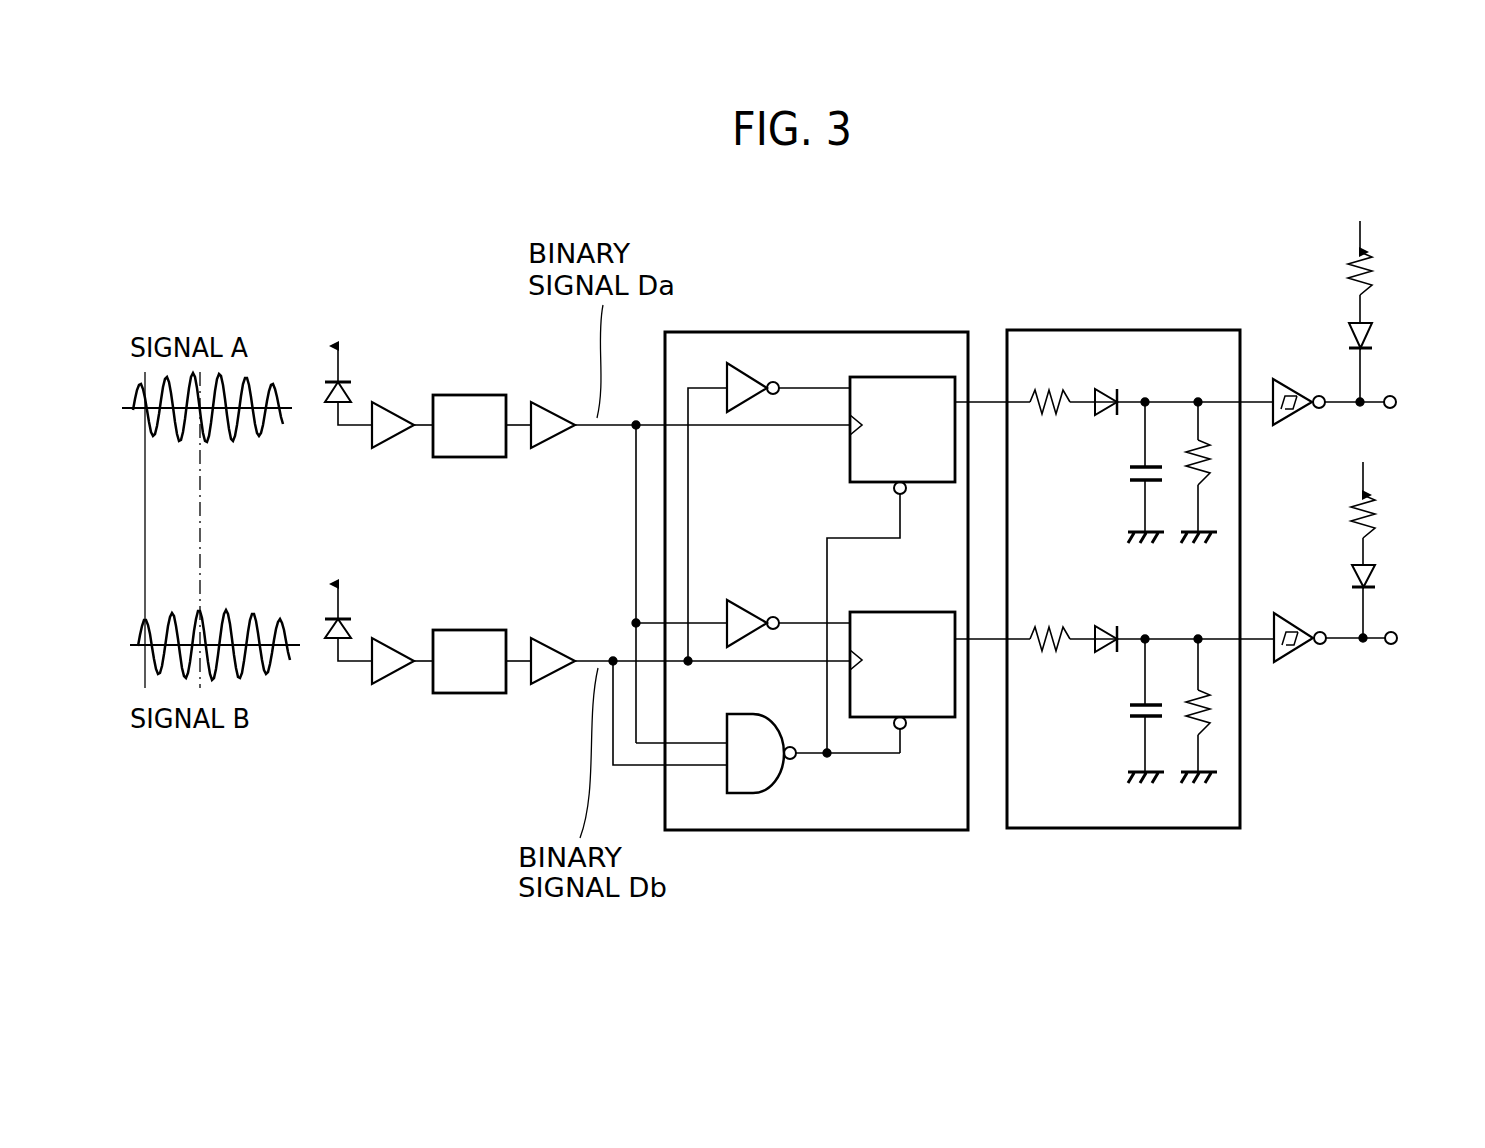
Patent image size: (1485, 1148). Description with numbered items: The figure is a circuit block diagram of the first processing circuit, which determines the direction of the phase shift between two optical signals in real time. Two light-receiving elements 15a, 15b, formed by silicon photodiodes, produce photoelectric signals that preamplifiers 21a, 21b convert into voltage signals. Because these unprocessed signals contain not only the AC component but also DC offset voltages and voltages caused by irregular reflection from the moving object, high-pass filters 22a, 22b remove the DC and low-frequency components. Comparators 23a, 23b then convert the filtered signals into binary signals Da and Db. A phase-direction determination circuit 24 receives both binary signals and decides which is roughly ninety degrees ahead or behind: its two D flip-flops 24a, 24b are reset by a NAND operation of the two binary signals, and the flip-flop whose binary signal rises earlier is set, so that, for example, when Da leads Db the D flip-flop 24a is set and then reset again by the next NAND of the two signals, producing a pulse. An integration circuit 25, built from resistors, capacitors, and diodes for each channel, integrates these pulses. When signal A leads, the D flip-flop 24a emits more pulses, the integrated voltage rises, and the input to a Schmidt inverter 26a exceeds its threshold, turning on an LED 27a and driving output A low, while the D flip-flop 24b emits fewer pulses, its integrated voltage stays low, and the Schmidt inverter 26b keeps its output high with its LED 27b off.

The light-receiving element 15a is at (330, 392).
The light-receiving element 15b is at (330, 628).
The preamplifier 21a is at (393, 402).
The preamplifier 21b is at (393, 684).
The high-pass filter 22a is at (470, 395).
The high-pass filter 22b is at (470, 694).
The comparator 23a is at (553, 402).
The comparator 23b is at (553, 682).
The phase-direction determination circuit 24 is at (800, 332).
The D flip-flop 24a is at (900, 377).
The D flip-flop 24b is at (940, 718).
The integration circuit 25 is at (1124, 330).
The Schmidt inverter 26a is at (1297, 380).
The Schmidt inverter 26b is at (1297, 661).
The LED 27a is at (1372, 340).
The LED 27b is at (1376, 570).